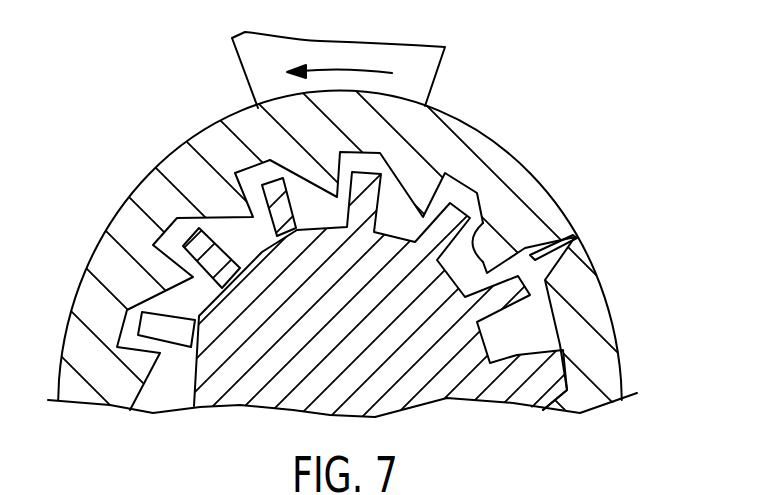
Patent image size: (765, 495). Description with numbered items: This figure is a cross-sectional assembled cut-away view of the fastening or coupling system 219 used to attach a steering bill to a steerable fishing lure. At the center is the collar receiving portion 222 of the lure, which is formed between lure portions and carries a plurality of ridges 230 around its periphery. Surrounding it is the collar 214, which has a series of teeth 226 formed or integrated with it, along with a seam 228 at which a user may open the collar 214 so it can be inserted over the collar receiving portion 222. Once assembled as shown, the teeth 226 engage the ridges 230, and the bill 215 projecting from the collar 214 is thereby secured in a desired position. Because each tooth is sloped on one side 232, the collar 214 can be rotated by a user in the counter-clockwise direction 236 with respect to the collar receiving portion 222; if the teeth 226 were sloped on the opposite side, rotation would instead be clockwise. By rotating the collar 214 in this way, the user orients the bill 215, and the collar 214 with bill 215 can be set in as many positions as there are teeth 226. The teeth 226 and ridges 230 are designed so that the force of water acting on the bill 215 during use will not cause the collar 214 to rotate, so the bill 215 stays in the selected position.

The collar 214 is at (139, 178).
The bill 215 is at (433, 72).
The coupling system 219 is at (176, 119).
The collar receiving portion 222 is at (425, 405).
The teeth 226 is at (487, 272).
The seam 228 is at (533, 255).
The ridges 230 is at (513, 285).
The sloped side 232 is at (470, 247).
The counter-clockwise direction 236 is at (345, 69).